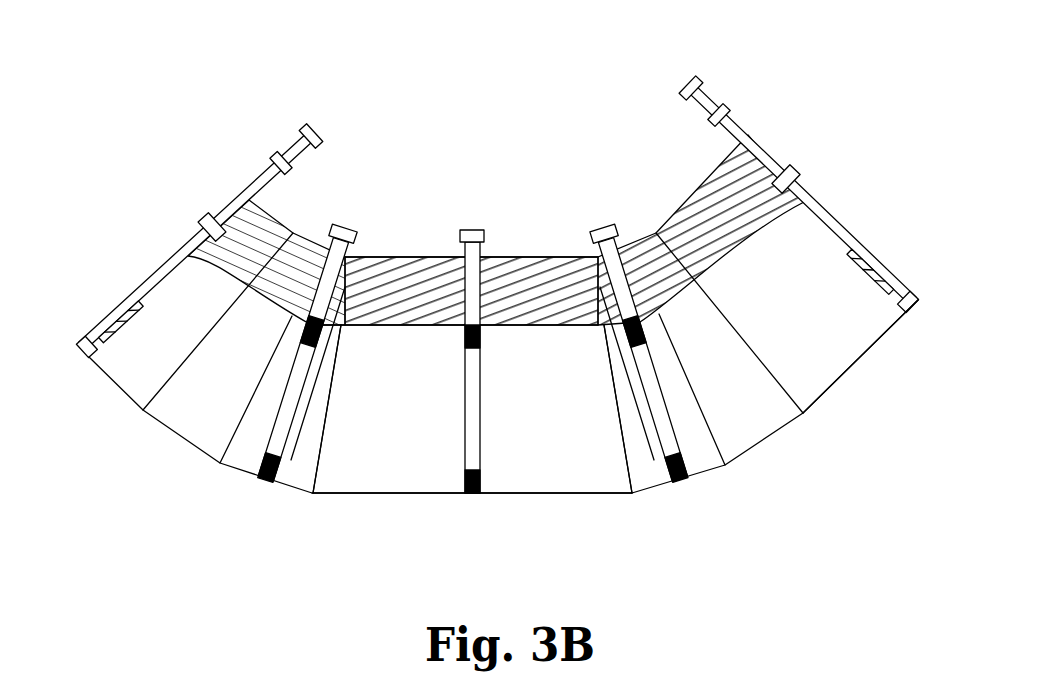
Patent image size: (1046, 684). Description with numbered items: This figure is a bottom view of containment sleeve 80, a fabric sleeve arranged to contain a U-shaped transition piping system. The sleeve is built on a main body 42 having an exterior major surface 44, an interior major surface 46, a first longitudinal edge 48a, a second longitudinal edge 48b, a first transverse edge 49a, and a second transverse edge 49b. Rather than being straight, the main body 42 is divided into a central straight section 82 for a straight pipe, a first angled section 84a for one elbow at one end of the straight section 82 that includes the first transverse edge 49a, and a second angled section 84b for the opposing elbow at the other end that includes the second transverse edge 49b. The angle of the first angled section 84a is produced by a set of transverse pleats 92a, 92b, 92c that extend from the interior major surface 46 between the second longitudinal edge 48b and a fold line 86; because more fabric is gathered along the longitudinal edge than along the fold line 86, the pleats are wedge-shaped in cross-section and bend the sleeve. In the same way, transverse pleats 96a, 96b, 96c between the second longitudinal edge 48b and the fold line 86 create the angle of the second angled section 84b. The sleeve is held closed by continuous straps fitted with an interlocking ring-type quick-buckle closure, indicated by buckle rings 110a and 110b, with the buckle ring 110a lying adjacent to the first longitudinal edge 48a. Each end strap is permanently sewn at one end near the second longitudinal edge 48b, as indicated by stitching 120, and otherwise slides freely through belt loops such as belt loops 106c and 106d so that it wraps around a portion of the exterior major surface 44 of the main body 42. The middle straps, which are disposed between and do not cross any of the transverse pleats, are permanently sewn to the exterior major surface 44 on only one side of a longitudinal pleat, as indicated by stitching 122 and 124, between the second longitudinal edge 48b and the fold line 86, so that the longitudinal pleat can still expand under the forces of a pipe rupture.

The main body 42 is at (397, 472).
The exterior major surface 44 is at (840, 338).
The interior major surface 46 is at (541, 278).
The first longitudinal edge 48a is at (432, 255).
The second longitudinal edge 48b is at (372, 320).
The first transverse edge 49a is at (77, 336).
The second transverse edge 49b is at (912, 291).
The containment sleeve 80 is at (504, 304).
The central straight section 82 is at (462, 532).
The first angled section 84a is at (152, 473).
The second angled section 84b is at (790, 474).
The fold line 86 is at (583, 494).
The transverse pleat 92a is at (193, 343).
The transverse pleat 92b is at (248, 398).
The transverse pleat 92c is at (323, 420).
The transverse pleat 96a is at (747, 327).
The transverse pleat 96b is at (687, 378).
The transverse pleat 96c is at (620, 423).
The belt loop 106c is at (124, 290).
The belt loop 106d is at (878, 262).
The buckle ring 110a is at (317, 124).
The buckle ring 110b is at (493, 343).
The stitching 120 is at (199, 229).
The stitching 122 is at (321, 338).
The stitching 124 is at (279, 462).